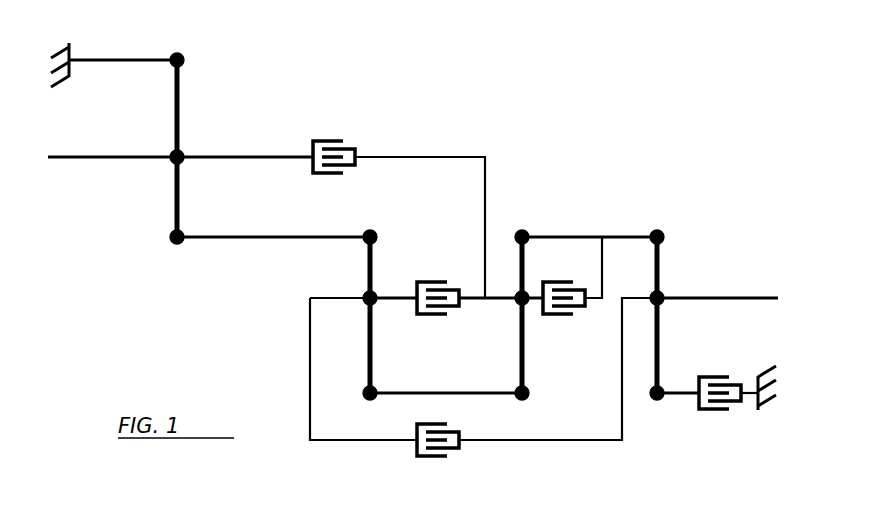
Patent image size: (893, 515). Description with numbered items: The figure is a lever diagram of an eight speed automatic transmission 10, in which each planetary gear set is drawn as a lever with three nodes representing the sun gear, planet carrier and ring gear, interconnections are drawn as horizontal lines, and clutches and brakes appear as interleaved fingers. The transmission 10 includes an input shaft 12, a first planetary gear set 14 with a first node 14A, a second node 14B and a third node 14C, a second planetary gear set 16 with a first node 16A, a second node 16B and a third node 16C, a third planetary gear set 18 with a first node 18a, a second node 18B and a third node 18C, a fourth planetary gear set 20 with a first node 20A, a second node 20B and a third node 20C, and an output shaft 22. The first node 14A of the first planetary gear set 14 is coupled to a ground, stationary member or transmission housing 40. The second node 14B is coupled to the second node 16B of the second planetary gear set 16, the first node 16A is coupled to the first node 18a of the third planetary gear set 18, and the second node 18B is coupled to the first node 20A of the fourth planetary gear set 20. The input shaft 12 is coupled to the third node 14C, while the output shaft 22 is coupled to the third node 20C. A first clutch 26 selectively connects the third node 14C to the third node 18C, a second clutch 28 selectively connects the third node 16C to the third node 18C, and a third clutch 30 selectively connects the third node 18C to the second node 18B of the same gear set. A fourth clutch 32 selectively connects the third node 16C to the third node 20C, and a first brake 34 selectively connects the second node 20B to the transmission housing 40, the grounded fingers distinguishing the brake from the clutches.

The eight speed automatic transmission 10 is at (606, 122).
The input shaft 12 is at (92, 160).
The first planetary gear set 14 is at (219, 159).
The first node of first planetary gear set 14A is at (184, 56).
The second node of first planetary gear set 14B is at (184, 233).
The third node of first planetary gear set 14C is at (184, 152).
The second planetary gear set 16 is at (402, 317).
The first node of second planetary gear set 16A is at (380, 388).
The second node of second planetary gear set 16B is at (377, 233).
The third node of second planetary gear set 16C is at (365, 294).
The third planetary gear set 18 is at (562, 309).
The first node of third planetary gear set 18a is at (498, 408).
The second node of third planetary gear set 18B is at (529, 233).
The third node of third planetary gear set 18C is at (519, 292).
The fourth planetary gear set 20 is at (681, 344).
The first node of fourth planetary gear set 20A is at (664, 233).
The second node of fourth planetary gear set 20B is at (662, 399).
The third node of fourth planetary gear set 20C is at (661, 292).
The output shaft 22 is at (716, 300).
The first clutch 26 is at (333, 142).
The second clutch 28 is at (434, 316).
The third clutch 30 is at (556, 316).
The fourth clutch 32 is at (434, 458).
The first brake 34 is at (713, 377).
The transmission housing 40 is at (70, 43).